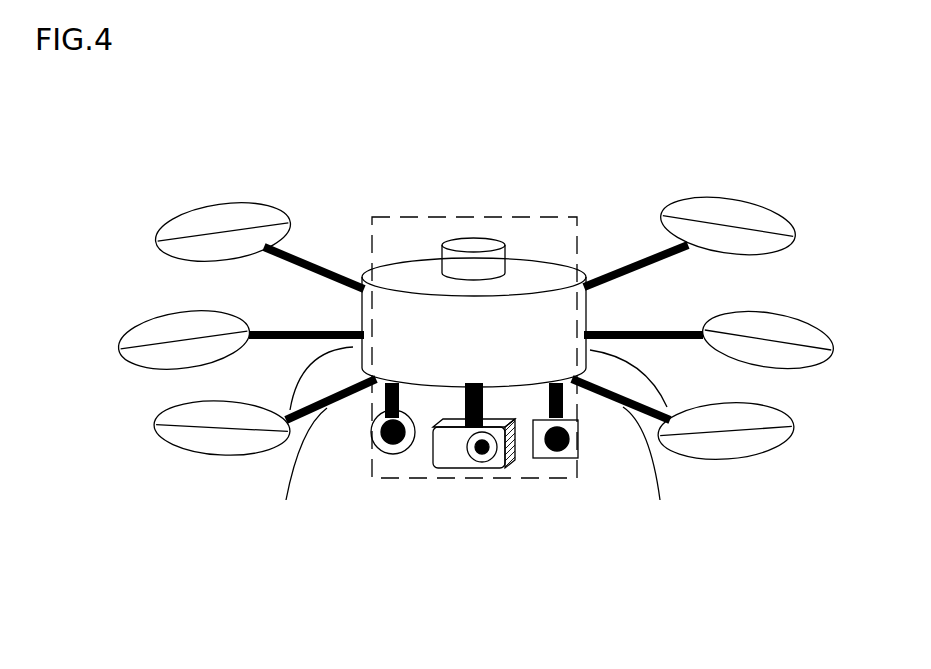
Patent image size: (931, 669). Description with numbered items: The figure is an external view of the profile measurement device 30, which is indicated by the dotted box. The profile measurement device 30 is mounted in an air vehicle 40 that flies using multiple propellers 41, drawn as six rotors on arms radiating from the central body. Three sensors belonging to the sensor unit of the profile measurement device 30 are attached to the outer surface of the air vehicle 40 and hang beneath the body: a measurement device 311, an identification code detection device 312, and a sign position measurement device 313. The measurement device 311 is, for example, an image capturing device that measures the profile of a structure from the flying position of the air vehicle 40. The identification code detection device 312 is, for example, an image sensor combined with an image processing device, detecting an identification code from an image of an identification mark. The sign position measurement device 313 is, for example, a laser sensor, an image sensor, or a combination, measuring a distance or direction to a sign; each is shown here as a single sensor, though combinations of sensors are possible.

The air vehicle 40 is at (326, 185).
The propellers 41 is at (222, 458).
The profile measurement device 30 is at (442, 215).
The measurement device 311 is at (468, 463).
The identification code detection device 312 is at (556, 455).
The sign position measurement device 313 is at (376, 436).